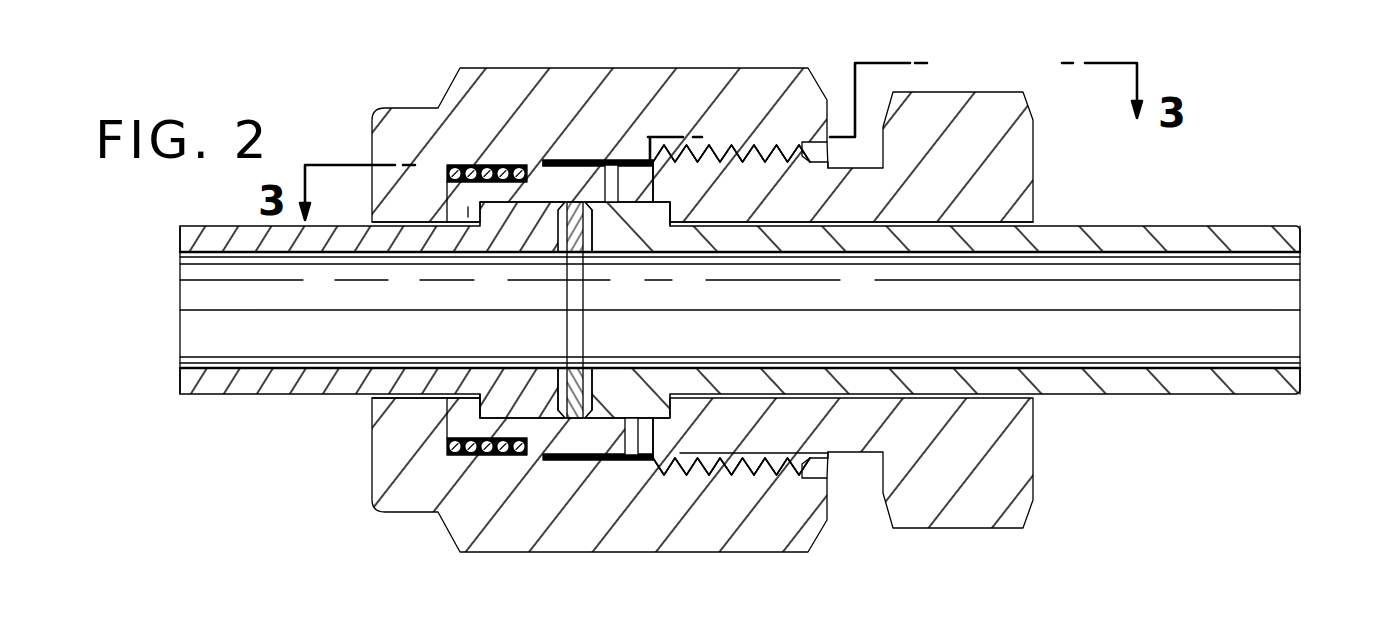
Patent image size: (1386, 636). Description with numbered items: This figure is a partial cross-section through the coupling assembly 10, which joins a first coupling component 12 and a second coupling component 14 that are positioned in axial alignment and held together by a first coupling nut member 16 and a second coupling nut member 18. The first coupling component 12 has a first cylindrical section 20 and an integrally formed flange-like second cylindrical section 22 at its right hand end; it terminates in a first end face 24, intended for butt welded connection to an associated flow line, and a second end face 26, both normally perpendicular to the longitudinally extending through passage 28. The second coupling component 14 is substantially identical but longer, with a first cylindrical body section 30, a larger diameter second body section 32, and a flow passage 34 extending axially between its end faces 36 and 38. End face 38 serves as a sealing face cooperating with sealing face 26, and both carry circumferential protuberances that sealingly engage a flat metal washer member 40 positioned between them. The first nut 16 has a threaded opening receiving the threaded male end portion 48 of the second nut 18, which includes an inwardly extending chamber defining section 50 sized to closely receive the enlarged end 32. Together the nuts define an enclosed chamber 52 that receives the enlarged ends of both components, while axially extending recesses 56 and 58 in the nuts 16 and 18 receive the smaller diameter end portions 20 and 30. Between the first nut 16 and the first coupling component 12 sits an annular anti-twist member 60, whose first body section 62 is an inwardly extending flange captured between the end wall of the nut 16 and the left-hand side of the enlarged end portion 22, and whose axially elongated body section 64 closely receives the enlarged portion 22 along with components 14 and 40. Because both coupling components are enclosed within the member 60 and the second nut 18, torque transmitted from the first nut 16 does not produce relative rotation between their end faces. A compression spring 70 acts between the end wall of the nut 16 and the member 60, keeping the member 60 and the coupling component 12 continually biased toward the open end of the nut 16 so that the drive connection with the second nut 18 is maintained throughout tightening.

The coupling assembly 10 is at (959, 82).
The first coupling component 12 is at (177, 406).
The second coupling component 14 is at (1208, 404).
The first coupling nut member 16 is at (460, 63).
The second coupling nut member 18 is at (1050, 501).
The first cylindrical section 20 is at (247, 394).
The second cylindrical section 22 is at (518, 386).
The first end face 24 is at (176, 382).
The second end face 26 is at (588, 255).
The through passage 28 is at (195, 274).
The first cylindrical body section 30 is at (1152, 226).
The second body section 32 is at (655, 245).
The flow passage 34 is at (1270, 295).
The end face 36 is at (1302, 380).
The end face 38 is at (566, 385).
The flat metal washer member 40 is at (574, 322).
The threaded male end portion 48 is at (777, 476).
The chamber defining section 50 is at (640, 197).
The enclosed chamber 52 is at (464, 404).
The axially extending recess 56 is at (393, 218).
The axially extending recess 58 is at (792, 222).
The anti-twist member 60 is at (571, 156).
The first body section 62 is at (468, 208).
The axially elongated body section 64 is at (544, 188).
The compression spring 70 is at (453, 458).